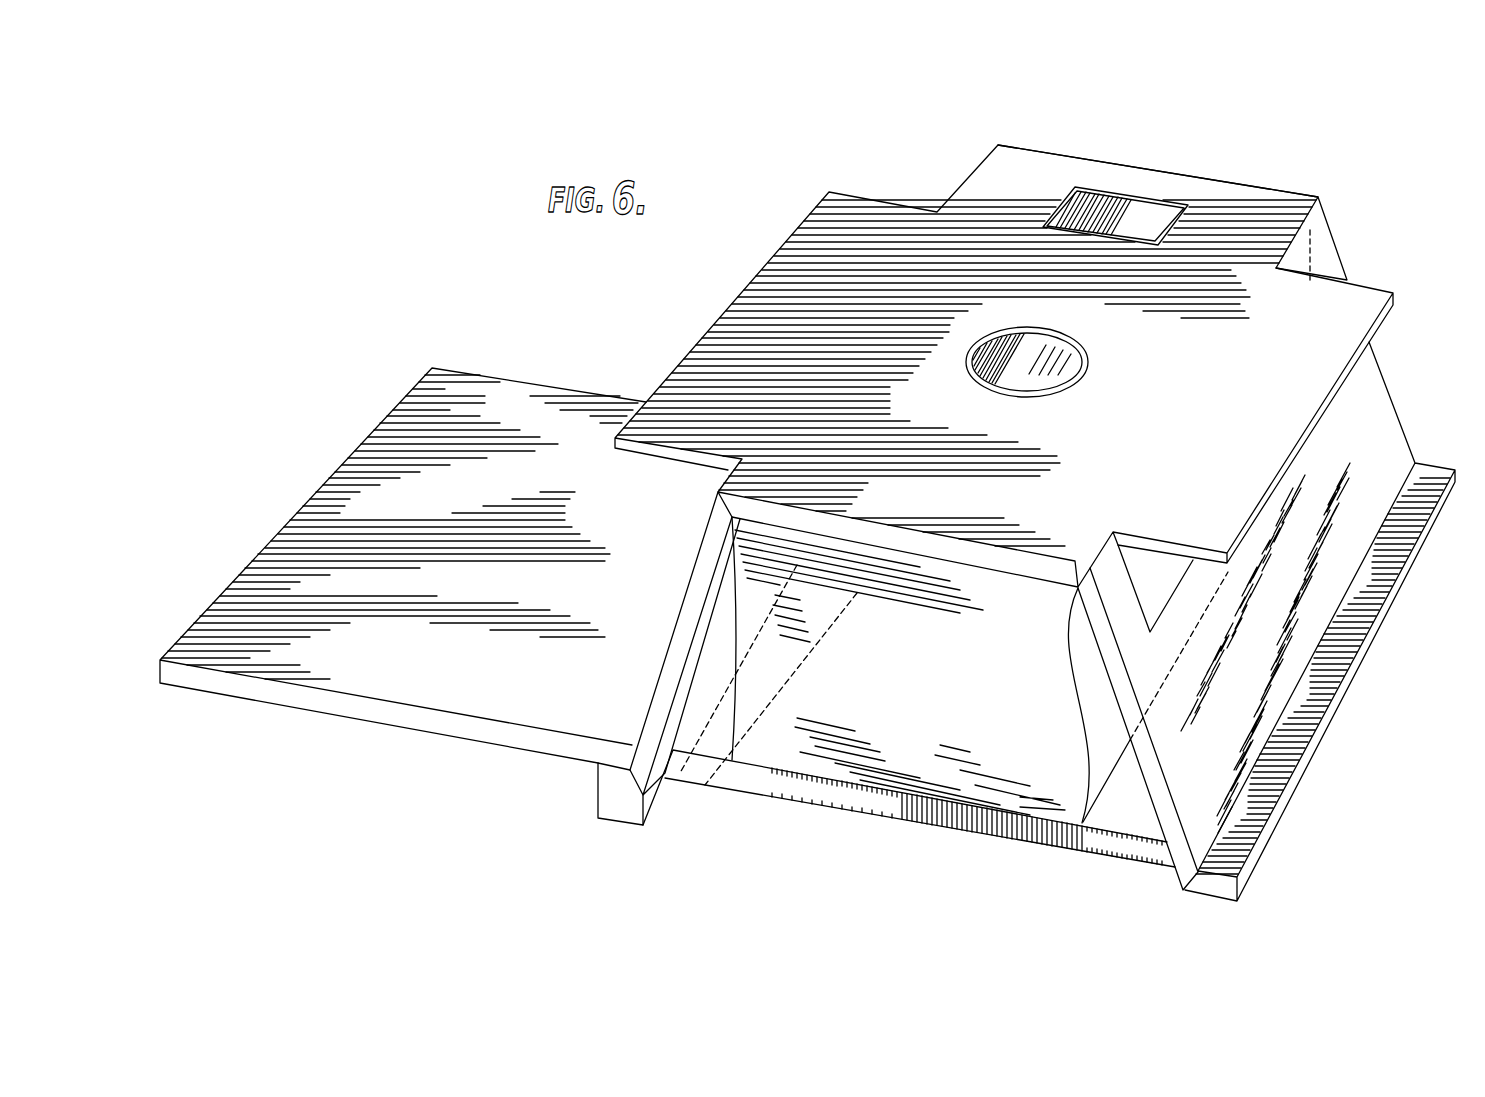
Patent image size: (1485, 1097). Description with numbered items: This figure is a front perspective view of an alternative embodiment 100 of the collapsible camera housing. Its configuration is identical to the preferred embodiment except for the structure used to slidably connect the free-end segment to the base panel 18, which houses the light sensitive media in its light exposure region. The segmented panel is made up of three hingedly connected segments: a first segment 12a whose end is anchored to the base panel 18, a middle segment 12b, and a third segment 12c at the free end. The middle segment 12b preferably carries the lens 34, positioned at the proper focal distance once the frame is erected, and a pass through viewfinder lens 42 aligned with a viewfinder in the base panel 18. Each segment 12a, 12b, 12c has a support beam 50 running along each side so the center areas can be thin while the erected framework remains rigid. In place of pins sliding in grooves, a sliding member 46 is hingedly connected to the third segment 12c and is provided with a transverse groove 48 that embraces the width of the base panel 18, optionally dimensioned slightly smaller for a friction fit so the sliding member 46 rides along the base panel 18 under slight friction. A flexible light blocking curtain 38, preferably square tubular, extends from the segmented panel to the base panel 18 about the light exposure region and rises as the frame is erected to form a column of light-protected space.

The alternative embodiment 100 is at (1066, 112).
The pass through viewfinder lens 42 is at (1073, 190).
The lens 34 is at (1023, 363).
The middle segment 12b is at (1185, 187).
The first segment 12a is at (1362, 422).
The base panel 18 is at (420, 688).
The third segment 12c is at (677, 665).
The sliding member 46 is at (617, 808).
The transverse groove 48 is at (665, 775).
The support beam 50 is at (680, 700).
The light blocking curtain 38 is at (1008, 765).